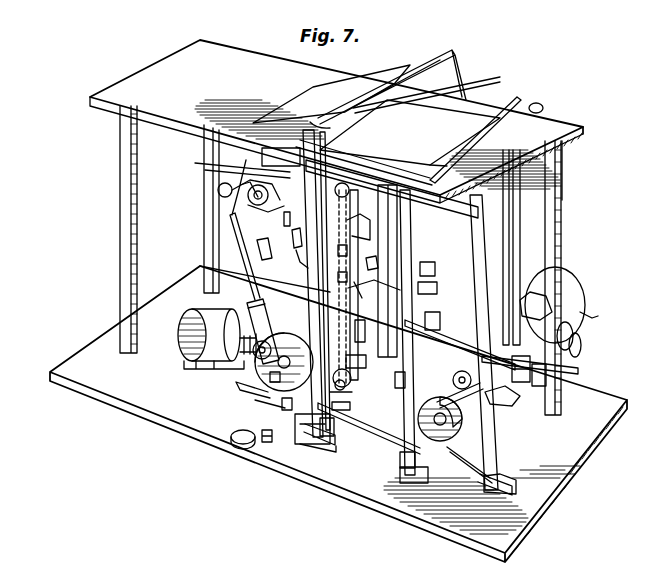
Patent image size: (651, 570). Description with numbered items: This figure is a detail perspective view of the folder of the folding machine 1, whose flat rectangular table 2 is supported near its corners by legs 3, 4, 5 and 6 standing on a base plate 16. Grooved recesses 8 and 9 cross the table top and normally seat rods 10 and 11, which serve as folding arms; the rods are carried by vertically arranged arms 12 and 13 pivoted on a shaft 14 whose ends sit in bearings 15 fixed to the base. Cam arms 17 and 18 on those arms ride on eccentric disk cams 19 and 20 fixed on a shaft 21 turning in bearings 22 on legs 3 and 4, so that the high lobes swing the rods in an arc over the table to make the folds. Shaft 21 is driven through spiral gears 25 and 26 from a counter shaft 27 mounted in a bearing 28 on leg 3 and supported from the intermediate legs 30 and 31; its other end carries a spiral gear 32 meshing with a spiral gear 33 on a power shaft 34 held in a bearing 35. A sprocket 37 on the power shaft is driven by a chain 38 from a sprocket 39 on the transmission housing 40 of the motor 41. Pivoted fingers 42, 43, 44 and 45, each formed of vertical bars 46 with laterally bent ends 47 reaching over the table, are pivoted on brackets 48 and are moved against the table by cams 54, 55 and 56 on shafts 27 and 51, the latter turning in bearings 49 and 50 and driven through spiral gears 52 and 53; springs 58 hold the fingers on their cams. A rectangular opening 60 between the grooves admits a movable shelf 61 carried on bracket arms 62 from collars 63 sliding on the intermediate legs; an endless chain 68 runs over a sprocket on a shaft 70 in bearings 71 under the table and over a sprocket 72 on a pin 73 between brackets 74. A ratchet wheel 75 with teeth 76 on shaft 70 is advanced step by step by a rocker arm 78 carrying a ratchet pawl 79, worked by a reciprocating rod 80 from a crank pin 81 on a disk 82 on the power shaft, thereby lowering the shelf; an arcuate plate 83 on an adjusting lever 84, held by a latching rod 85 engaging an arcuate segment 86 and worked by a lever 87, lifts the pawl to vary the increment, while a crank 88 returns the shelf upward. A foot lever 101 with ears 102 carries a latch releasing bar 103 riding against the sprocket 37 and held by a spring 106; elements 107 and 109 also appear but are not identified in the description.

The folding machine 1 is at (575, 115).
The table 2 is at (583, 128).
The leg 3 is at (560, 186).
The leg 4 is at (480, 248).
The leg 5 is at (204, 146).
The leg 6 is at (120, 262).
The grooved recess 8 is at (315, 125).
The grooved recess 9 is at (441, 162).
The rod 10 is at (432, 55).
The rod 11 is at (547, 102).
The vertically arranged arm 12 is at (474, 212).
The vertically arranged arm 13 is at (520, 203).
The shaft 14 is at (472, 367).
The bearings 15 is at (453, 378).
The base plate 16 is at (60, 373).
The cam arm 17 is at (588, 318).
The cam arm 18 is at (522, 296).
The cam 19 is at (566, 283).
The cam 20 is at (576, 352).
The shaft 21 is at (500, 402).
The bearings 22 is at (540, 387).
The spiral gear 25 is at (573, 338).
The spiral gear 26 is at (524, 383).
The counter shaft 27 is at (456, 338).
The bearing 28 is at (563, 387).
The intermediate leg 30 is at (380, 216).
The intermediate leg 31 is at (314, 292).
The spiral gear 32 is at (352, 330).
The spiral gear 33 is at (371, 263).
The power shaft 34 is at (341, 277).
The bearing 35 is at (366, 282).
The sprocket 37 is at (355, 358).
The chain 38 is at (290, 335).
The sprocket 39 is at (258, 358).
The housing 40 is at (248, 355).
The motor 41 is at (190, 365).
The pivoted finger 42 is at (350, 138).
The pivoted finger 43 is at (430, 270).
The pivoted finger 44 is at (400, 376).
The pivoted finger 45 is at (528, 233).
The vertically arranged bars 46 is at (430, 288).
The laterally bent ends 47 is at (438, 93).
The brackets 48 is at (400, 478).
The bearing 49 is at (510, 441).
The bearing 50 is at (304, 425).
The shaft 51 is at (328, 449).
The spiral gear 52 is at (420, 421).
The spiral gear 53 is at (404, 458).
The cam 54 is at (334, 428).
The cam 55 is at (436, 320).
The cam 56 is at (372, 442).
The springs 58 is at (352, 150).
The rectangular-shaped opening 60 is at (470, 118).
The movable shelf 61 is at (432, 214).
The bracket arms 62 is at (341, 226).
The collars 63 is at (341, 252).
The endless chain 68 is at (355, 229).
The shaft 70 is at (242, 240).
The bearings 71 is at (275, 158).
The sprocket 72 is at (344, 388).
The pin 73 is at (342, 397).
The brackets 74 is at (342, 407).
The ratchet wheel 75 is at (296, 242).
The teeth 76 is at (300, 262).
The rocker arm 78 is at (235, 205).
The ratchet pawl 79 is at (287, 226).
The reciprocating rod 80 is at (250, 298).
The crank pin 81 is at (245, 393).
The disk 82 is at (272, 383).
The arcuate plate 83 is at (248, 196).
The adjusting lever 84 is at (255, 171).
The latching rod 85 is at (216, 188).
The arcuate segment 86 is at (248, 212).
The lever 87 is at (230, 162).
The crank 88 is at (263, 252).
The foot lever 101 is at (244, 446).
The ears 102 is at (282, 410).
The latch releasing bar 103 is at (268, 401).
The spring 106 is at (266, 444).
The rail 107 is at (502, 100).
The sheet 109 is at (313, 90).